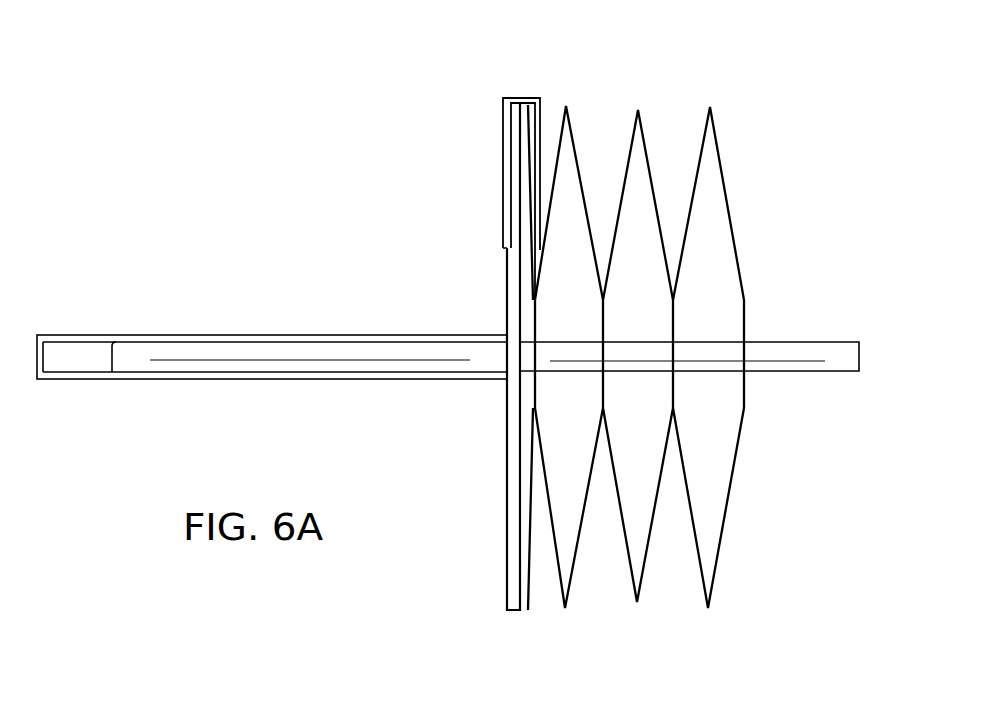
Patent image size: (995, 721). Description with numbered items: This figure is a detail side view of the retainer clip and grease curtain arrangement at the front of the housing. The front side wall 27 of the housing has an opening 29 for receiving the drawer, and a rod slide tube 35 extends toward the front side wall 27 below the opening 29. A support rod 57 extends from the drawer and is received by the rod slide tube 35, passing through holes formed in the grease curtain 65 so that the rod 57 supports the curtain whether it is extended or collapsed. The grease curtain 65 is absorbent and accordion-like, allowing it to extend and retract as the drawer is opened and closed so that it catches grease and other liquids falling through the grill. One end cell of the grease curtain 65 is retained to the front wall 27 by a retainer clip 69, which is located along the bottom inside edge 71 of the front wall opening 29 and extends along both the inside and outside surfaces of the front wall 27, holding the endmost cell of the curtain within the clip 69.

The opening 29 is at (504, 36).
The bottom inside edge 71 is at (515, 98).
The retainer clip 69 is at (526, 98).
The front side wall 27 is at (507, 284).
The grease curtain 65 is at (733, 220).
The rod slide tubes 35 is at (86, 334).
The support rods 57 is at (811, 342).